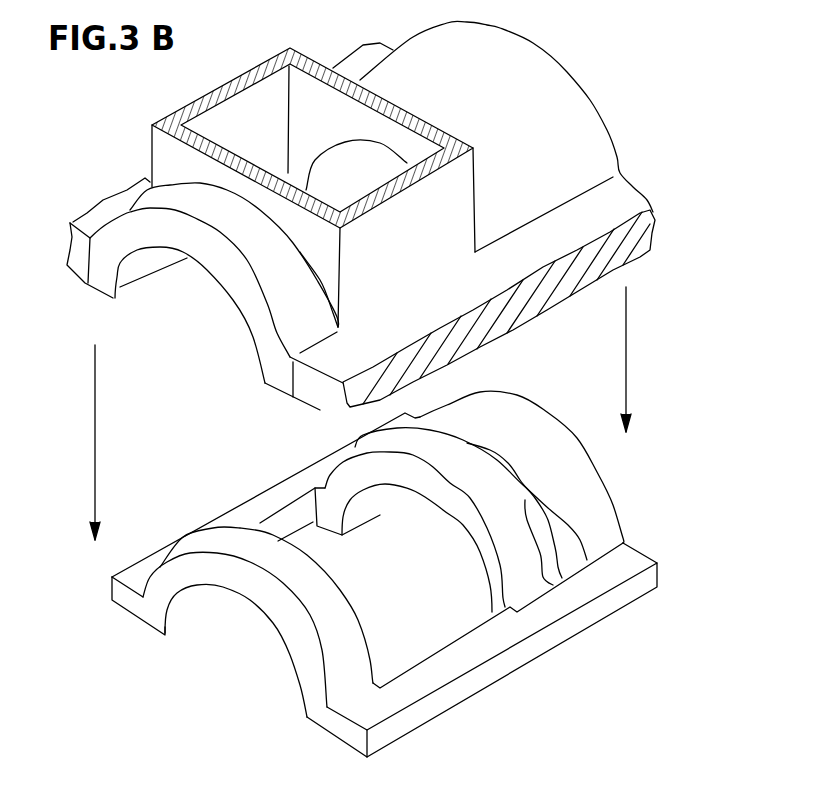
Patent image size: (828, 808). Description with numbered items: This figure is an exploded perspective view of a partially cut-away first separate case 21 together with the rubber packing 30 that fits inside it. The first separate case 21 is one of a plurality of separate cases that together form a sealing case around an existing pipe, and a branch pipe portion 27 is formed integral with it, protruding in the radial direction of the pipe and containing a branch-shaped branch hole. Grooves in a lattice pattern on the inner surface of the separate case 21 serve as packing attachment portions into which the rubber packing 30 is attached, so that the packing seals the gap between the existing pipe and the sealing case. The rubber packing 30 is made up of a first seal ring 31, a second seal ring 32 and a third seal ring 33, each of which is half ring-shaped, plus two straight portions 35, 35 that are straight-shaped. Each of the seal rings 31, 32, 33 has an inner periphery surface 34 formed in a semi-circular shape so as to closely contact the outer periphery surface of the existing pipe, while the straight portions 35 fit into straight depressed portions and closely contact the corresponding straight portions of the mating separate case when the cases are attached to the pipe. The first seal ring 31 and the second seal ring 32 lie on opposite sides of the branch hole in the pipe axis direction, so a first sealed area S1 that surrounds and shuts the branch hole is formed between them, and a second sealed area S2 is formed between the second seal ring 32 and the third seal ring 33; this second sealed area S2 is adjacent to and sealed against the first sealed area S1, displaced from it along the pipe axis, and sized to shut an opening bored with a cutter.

The first separate case 21 is at (618, 200).
The branch pipe portion 27 is at (477, 190).
The rubber packing 30 is at (597, 507).
The first seal ring 31 is at (237, 550).
The second seal ring 32 is at (433, 467).
The third seal ring 33 is at (520, 420).
The inner periphery surface 34 is at (523, 488).
The straight portion 35 is at (257, 510).
The first sealed area S1 is at (437, 627).
The second sealed area S2 is at (550, 553).